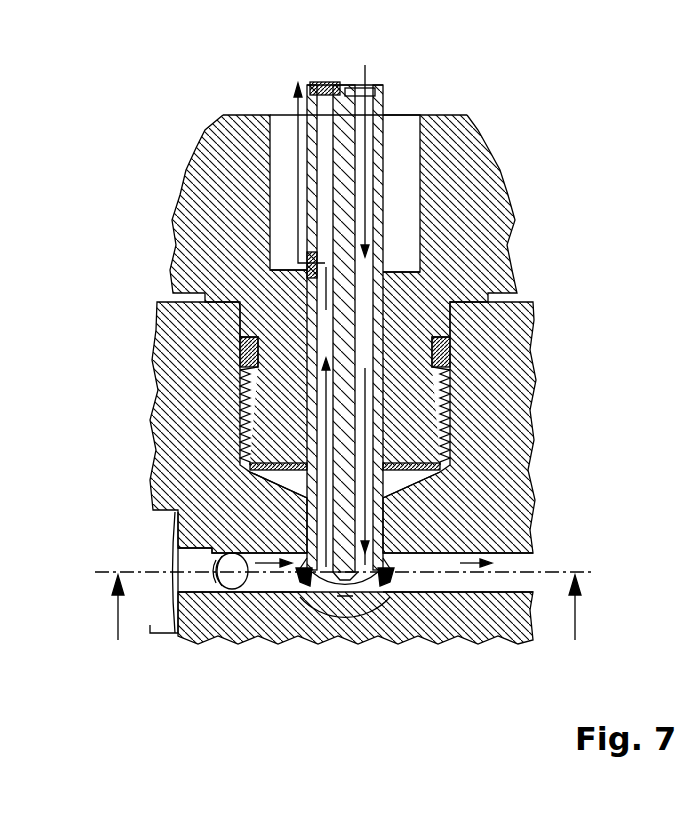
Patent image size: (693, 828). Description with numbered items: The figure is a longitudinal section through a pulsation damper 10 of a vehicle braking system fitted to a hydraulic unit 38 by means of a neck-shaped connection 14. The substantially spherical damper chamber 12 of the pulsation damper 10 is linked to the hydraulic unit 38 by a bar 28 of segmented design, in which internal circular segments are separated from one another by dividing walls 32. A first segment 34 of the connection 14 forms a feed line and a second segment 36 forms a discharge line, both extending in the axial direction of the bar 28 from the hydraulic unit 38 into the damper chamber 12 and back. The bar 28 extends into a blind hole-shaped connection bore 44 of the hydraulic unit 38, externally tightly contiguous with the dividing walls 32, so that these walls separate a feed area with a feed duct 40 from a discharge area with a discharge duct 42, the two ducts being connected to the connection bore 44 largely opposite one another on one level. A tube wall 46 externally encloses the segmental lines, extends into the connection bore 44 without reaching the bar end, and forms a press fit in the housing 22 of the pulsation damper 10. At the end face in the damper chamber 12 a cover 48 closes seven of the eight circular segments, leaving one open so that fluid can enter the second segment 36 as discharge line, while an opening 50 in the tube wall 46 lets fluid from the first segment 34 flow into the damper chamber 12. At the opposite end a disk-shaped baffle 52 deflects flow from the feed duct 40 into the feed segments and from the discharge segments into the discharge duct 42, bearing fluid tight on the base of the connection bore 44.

The pulsation damper 10 is at (178, 142).
The damper chamber 12 is at (404, 128).
The connection 14 is at (428, 518).
The housing 22 is at (484, 203).
The bar 28 is at (305, 152).
The dividing walls 32 is at (323, 82).
The first segment 34 is at (302, 588).
The second segment 36 is at (390, 586).
The hydraulic unit 38 is at (178, 400).
The feed duct 40 is at (262, 600).
The discharge duct 42 is at (513, 578).
The connection bore 44 is at (330, 603).
The tube wall 46 is at (386, 283).
The cover 48 is at (325, 82).
The opening 50 is at (318, 265).
The baffle 52 is at (345, 610).